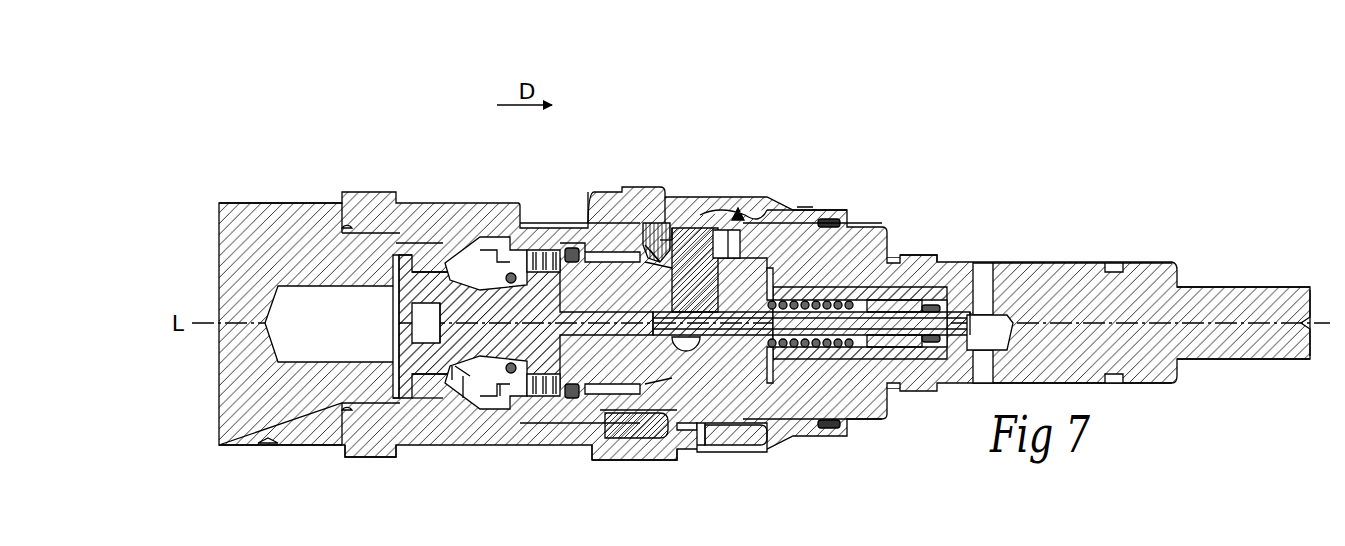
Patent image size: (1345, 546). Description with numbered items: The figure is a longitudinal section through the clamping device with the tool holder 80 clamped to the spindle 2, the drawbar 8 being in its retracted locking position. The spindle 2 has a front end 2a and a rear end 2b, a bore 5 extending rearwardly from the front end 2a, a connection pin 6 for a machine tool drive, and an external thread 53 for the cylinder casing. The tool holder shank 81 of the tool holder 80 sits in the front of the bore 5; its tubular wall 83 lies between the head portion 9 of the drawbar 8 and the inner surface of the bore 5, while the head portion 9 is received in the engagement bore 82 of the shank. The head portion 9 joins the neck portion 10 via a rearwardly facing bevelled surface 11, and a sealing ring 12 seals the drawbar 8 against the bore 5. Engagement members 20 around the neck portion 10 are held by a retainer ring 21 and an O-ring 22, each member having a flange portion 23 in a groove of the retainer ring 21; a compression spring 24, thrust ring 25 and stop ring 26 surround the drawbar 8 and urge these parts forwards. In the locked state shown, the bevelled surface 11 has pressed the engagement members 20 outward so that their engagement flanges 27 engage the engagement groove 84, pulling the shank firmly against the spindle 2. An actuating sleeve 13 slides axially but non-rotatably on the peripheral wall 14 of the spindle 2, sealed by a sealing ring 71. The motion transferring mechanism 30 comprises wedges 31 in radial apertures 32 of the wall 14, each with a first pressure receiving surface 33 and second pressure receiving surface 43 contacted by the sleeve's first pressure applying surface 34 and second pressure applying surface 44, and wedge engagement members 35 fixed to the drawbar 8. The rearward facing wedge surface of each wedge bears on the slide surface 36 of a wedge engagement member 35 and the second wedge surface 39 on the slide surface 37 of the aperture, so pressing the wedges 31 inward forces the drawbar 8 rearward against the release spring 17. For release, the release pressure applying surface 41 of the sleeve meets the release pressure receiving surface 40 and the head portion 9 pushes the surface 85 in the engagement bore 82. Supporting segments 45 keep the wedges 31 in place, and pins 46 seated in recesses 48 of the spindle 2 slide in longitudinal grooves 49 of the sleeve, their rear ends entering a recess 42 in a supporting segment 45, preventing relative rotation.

The spindle 2 is at (783, 407).
The front end 2a is at (347, 464).
The rear end 2b is at (1300, 374).
The bore 5 is at (777, 372).
The connection pin 6 is at (1235, 353).
The drawbar 8 is at (607, 440).
The head portion 9 is at (433, 277).
The neck portion 10 is at (477, 287).
The bevelled surface 11 is at (452, 280).
The sealing ring 12 is at (562, 245).
The actuating sleeve 13 is at (680, 440).
The peripheral wall 14 is at (636, 252).
The release spring 17 is at (848, 346).
The engagement members 20 is at (438, 392).
The retainer ring 21 is at (508, 400).
The O-ring 22 is at (513, 395).
The flange portion 23 is at (463, 398).
The compression spring 24 is at (548, 395).
The thrust ring 25 is at (523, 423).
The stop ring 26 is at (452, 398).
The engagement flange 27 is at (455, 392).
The motion transferring mechanism 30 is at (763, 223).
The wedges 31 is at (600, 250).
The apertures 32 is at (646, 242).
The first pressure receiving surface 33 is at (663, 243).
The first pressure applying surface 34 is at (695, 289).
The wedge engagement members 35 is at (742, 262).
The slide surface 36 is at (673, 230).
The slide surface 37 is at (653, 246).
The second wedge surface 39 is at (655, 256).
The release pressure receiving surface 40 is at (711, 220).
The release pressure applying surface 41 is at (730, 262).
The recess 42 is at (713, 440).
The second pressure receiving surface 43 is at (660, 240).
The second pressure applying surface 44 is at (725, 222).
The supporting segments 45 is at (738, 433).
The pins 46 is at (611, 440).
The recess 48 is at (663, 440).
The longitudinal groove 49 is at (674, 430).
The external thread 53 is at (920, 255).
The sealing ring 71 is at (832, 432).
The tool holder 80 is at (253, 195).
The tool holder shank 81 is at (390, 243).
The engagement bore 82 is at (417, 270).
The tubular wall 83 is at (442, 242).
The engagement groove 84 is at (443, 392).
The surface 85 is at (393, 372).